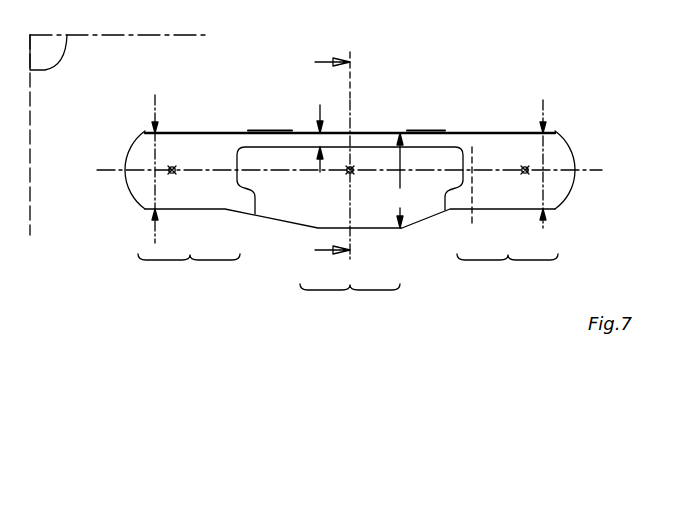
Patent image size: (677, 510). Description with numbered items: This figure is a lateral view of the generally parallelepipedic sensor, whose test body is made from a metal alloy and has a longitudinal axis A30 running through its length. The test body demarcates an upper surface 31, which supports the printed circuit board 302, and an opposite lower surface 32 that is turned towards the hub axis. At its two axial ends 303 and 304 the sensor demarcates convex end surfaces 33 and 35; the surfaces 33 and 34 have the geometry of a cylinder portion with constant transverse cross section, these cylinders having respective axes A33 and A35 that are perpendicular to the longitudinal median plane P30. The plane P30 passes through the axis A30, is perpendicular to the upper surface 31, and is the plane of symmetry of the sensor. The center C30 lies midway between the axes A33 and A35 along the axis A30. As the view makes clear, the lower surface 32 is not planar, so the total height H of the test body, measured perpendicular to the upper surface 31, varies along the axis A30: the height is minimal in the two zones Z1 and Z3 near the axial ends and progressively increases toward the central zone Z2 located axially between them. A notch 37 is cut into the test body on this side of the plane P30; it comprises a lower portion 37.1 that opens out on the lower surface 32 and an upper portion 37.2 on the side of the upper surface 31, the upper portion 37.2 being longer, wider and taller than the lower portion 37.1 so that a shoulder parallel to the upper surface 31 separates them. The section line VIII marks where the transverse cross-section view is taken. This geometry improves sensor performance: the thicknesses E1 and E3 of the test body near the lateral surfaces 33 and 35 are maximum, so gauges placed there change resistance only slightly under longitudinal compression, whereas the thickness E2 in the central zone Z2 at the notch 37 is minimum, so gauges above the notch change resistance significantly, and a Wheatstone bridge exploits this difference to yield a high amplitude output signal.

The longitudinal median plane P30 is at (117, 135).
The longitudinal axis A30 is at (333, 171).
The printed circuit board 302 is at (478, 131).
The axial end 303 is at (137, 148).
The axial end 304 is at (566, 185).
The upper surface 31 is at (163, 125).
The lower surface 32 is at (195, 211).
The end surface 33 is at (127, 187).
The end surface 34 is at (197, 151).
The end surface 35 is at (577, 153).
The notch 37 is at (409, 165).
The lower portion of notch 37.1 is at (486, 220).
The upper portion of notch 37.2 is at (496, 186).
The thickness E1 is at (158, 169).
The thickness E2 is at (330, 129).
The thickness E3 is at (545, 164).
The axis of end surface cylinder A33 is at (179, 183).
The axis of end surface cylinder A35 is at (528, 182).
The center C30 is at (365, 157).
The height H is at (400, 180).
The zone Z1 is at (189, 270).
The central zone Z2 is at (350, 301).
The zone Z3 is at (507, 270).
The section line VIII is at (321, 159).